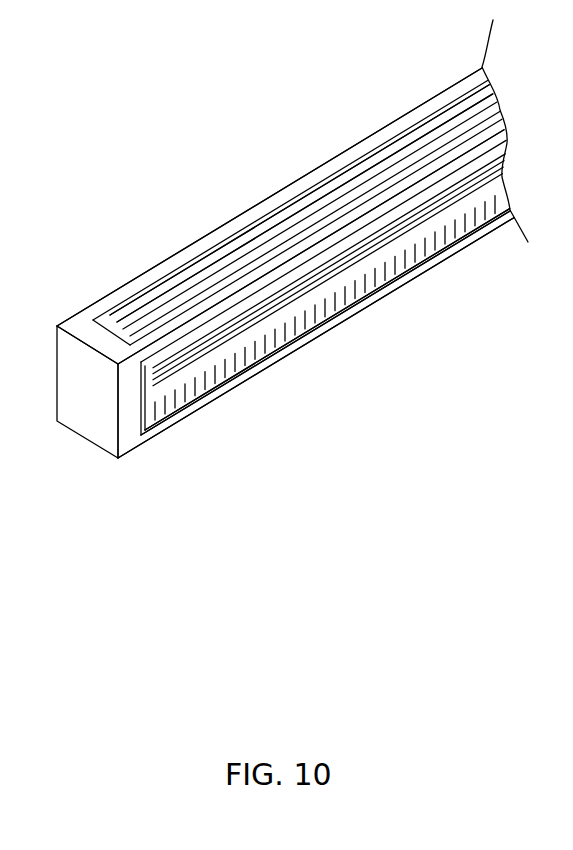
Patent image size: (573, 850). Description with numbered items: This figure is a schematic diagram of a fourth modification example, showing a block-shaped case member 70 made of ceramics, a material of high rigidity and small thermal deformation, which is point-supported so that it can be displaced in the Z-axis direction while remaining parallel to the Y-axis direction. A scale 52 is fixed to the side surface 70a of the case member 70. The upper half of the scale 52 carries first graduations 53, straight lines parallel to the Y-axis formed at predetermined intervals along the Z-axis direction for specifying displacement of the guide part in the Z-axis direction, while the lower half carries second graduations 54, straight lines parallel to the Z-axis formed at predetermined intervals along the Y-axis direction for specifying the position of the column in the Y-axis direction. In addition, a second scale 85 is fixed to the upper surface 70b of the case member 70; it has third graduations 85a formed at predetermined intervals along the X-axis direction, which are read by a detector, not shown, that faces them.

The case member 70 is at (100, 422).
The side surface of case member 70a is at (132, 438).
The upper surface of case member 70b is at (77, 323).
The second scale 85 is at (158, 278).
The third graduations 85a is at (216, 244).
The scale 52 is at (325, 335).
The first graduations 53 is at (213, 398).
The second graduations 54 is at (262, 368).